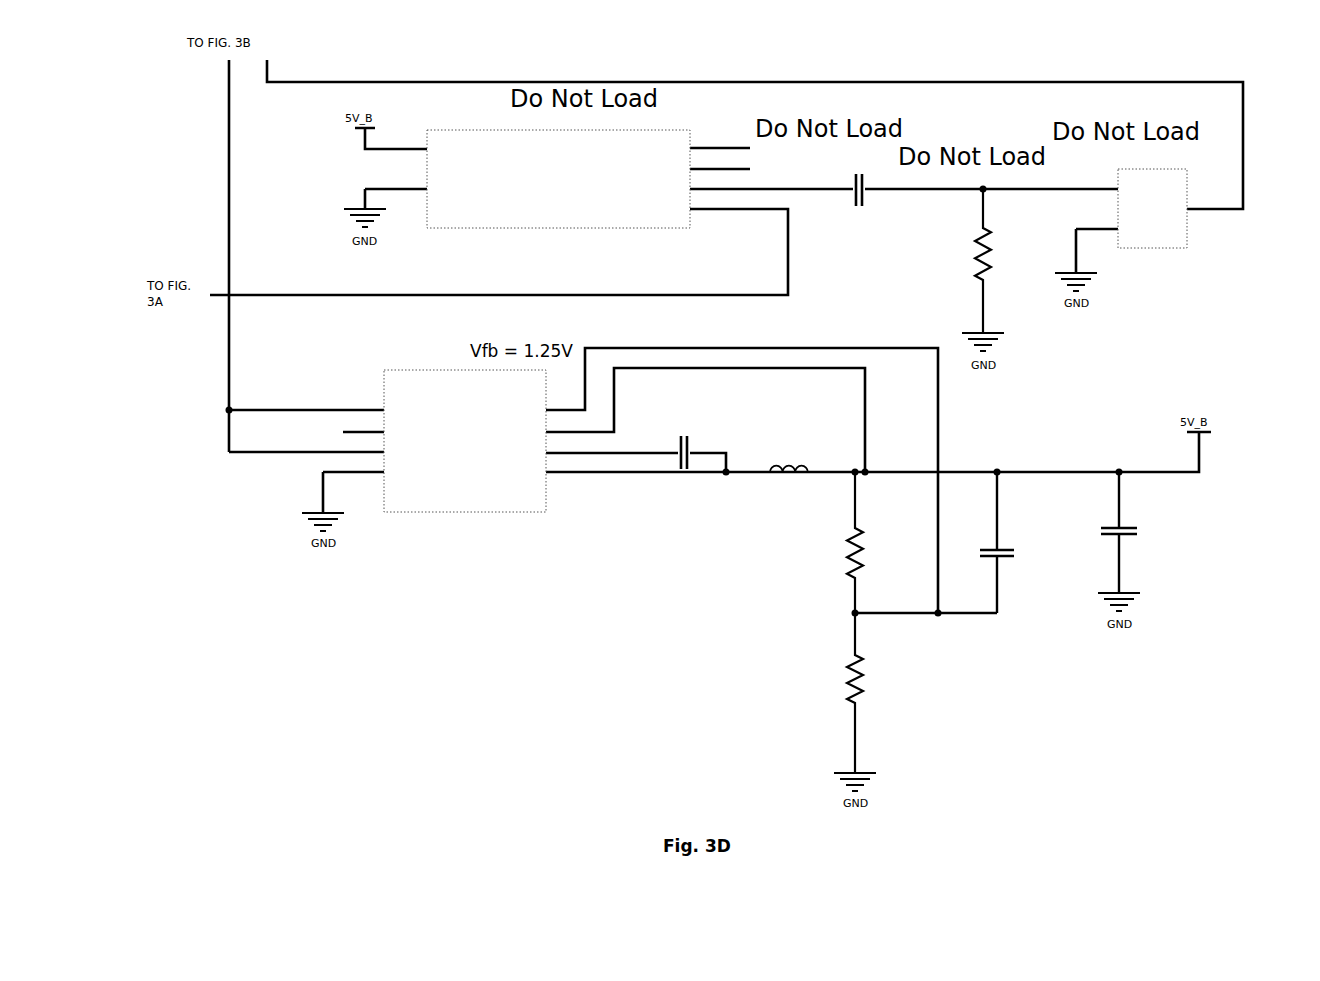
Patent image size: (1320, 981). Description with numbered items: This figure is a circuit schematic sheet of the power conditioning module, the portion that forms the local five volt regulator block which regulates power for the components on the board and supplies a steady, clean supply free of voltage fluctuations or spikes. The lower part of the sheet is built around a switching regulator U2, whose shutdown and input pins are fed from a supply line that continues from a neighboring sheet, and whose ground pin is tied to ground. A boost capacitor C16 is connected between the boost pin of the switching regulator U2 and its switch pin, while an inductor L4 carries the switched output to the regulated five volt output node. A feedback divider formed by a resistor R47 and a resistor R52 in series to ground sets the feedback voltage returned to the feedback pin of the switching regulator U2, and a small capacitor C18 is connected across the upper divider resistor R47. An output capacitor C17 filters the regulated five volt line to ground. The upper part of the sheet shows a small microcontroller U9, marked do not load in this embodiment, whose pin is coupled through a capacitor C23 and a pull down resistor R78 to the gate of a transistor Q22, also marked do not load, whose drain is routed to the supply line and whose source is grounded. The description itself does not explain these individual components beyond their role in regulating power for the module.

The microcontroller PIC10F200T-I/OT U9 is at (554, 178).
The capacitor 0.01uF 50V C23 is at (872, 195).
The resistor 330 ohm R78 is at (1004, 261).
The MOSFET 2N7002W Q22 is at (1179, 221).
The switching regulator LT3470 U2 is at (462, 447).
The boost capacitor 0.22uF C16 is at (712, 437).
The inductor 33uH L4 is at (787, 479).
The feedback resistor 3.01K R47 is at (881, 542).
The feedback resistor 1.00K R52 is at (881, 693).
The capacitor 22pF C18 is at (1021, 542).
The output capacitor 22uF C17 is at (1143, 532).